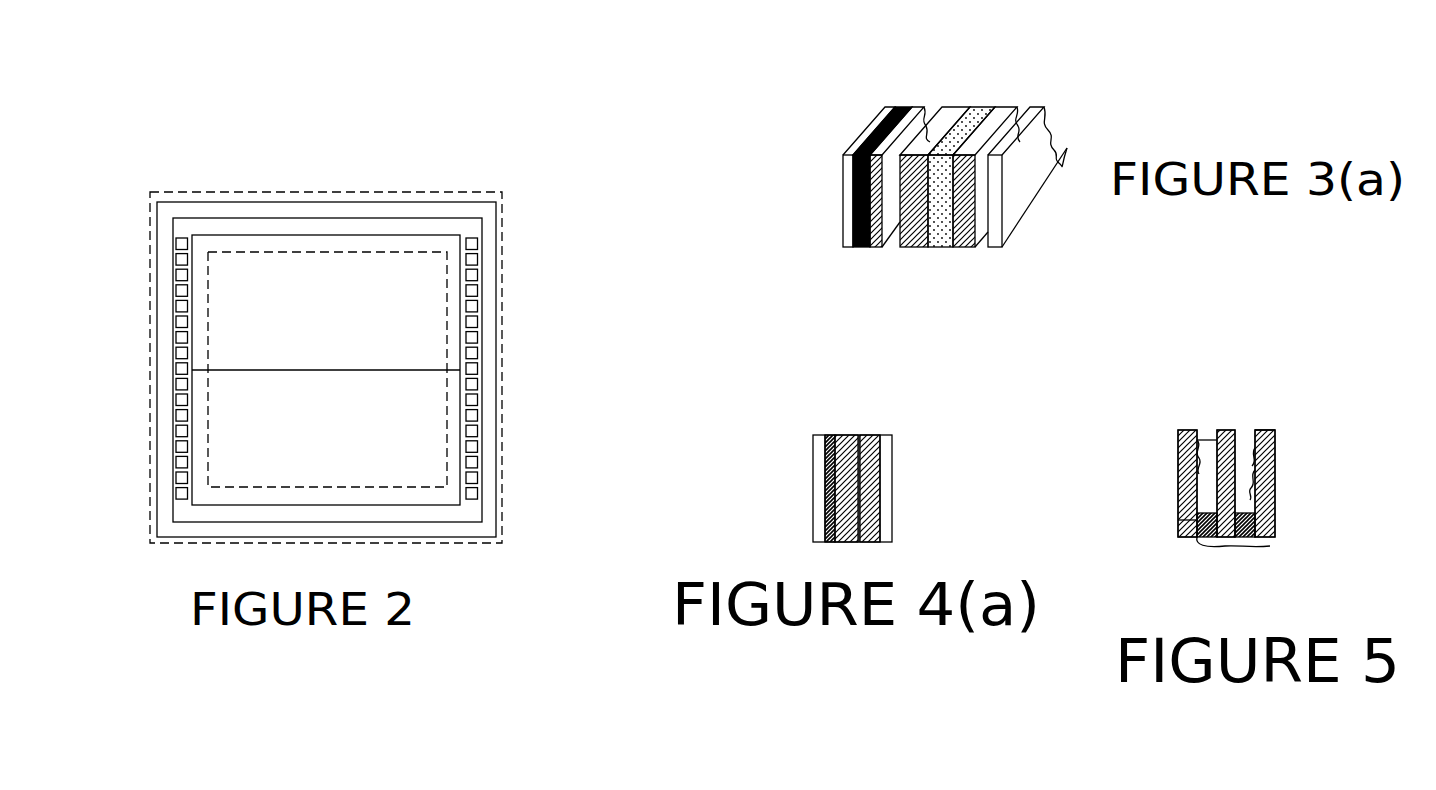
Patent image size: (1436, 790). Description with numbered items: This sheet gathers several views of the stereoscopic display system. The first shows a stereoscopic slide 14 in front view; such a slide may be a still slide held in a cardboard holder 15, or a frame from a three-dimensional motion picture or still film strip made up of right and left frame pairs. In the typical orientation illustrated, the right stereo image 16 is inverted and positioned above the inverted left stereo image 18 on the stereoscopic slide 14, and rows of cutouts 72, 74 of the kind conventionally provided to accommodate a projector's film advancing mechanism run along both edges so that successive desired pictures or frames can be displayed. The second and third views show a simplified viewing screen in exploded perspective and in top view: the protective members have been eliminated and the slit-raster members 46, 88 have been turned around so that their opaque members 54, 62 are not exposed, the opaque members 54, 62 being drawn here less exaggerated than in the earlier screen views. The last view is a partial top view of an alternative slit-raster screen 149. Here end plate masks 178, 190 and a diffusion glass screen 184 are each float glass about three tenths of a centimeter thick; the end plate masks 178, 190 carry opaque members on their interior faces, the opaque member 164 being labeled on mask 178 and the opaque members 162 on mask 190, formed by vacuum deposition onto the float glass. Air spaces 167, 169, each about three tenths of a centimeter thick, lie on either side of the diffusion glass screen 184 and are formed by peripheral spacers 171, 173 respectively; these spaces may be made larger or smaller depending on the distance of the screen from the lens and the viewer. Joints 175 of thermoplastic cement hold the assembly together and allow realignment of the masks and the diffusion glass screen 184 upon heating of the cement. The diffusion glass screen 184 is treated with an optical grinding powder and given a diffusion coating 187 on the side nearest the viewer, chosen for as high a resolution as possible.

In FIG. 2, the stereoscopic slide 14 is at (361, 182).
In FIG. 2, the cardboard holder 15 is at (497, 192).
In FIG. 2, the right stereo image 16 is at (434, 302).
In FIG. 2, the left stereo image 18 is at (434, 424).
In FIG. 2, the cutouts 72 is at (176, 244).
In FIG. 2, the cutouts 74 is at (472, 321).
In FIG. 3A, the slit-raster member 46 is at (880, 107).
In FIG. 3A, the opaque member 54 is at (862, 242).
In FIG. 3A, the opaque member 62 is at (982, 243).
In FIG. 3A, the slit-raster member 88 is at (1030, 107).
In FIG. 5, the slit-raster screen 149 is at (1285, 413).
In FIG. 5, the end plate mask 178 is at (1186, 430).
In FIG. 5, the diffusion glass screen 184 is at (1226, 430).
In FIG. 5, the diffusion coating 187 is at (1240, 434).
In FIG. 5, the end plate mask 190 is at (1265, 430).
In FIG. 5, the air space 167 is at (1205, 441).
In FIG. 5, the side wall 164 is at (1184, 462).
In FIG. 5, the air space 169 is at (1258, 462).
In FIG. 5, the opaque members 162 is at (1262, 474).
In FIG. 5, the peripheral spacer 171 is at (1182, 521).
In FIG. 5, the peripheral spacer 173 is at (1265, 513).
In FIG. 5, the joints 175 is at (1200, 548).